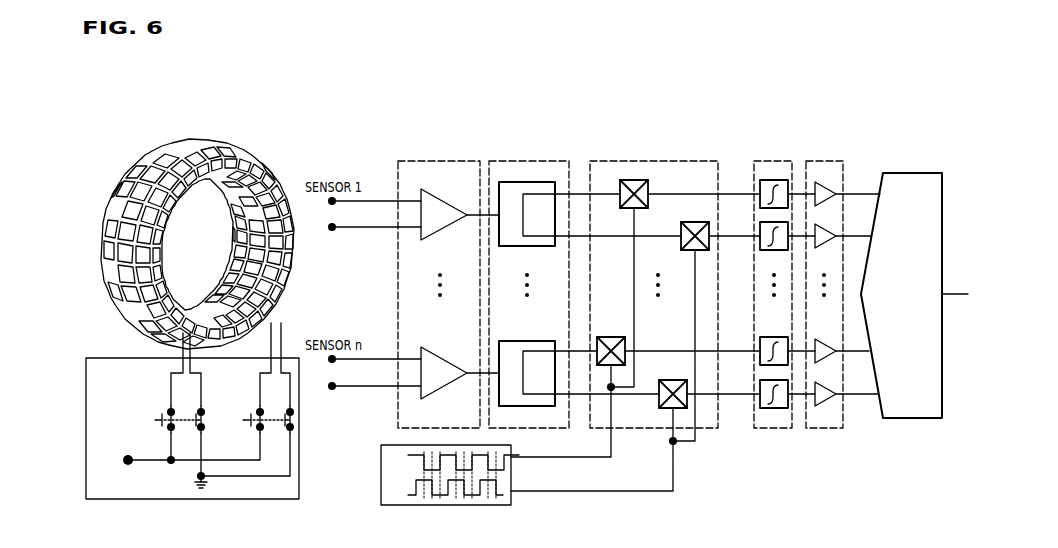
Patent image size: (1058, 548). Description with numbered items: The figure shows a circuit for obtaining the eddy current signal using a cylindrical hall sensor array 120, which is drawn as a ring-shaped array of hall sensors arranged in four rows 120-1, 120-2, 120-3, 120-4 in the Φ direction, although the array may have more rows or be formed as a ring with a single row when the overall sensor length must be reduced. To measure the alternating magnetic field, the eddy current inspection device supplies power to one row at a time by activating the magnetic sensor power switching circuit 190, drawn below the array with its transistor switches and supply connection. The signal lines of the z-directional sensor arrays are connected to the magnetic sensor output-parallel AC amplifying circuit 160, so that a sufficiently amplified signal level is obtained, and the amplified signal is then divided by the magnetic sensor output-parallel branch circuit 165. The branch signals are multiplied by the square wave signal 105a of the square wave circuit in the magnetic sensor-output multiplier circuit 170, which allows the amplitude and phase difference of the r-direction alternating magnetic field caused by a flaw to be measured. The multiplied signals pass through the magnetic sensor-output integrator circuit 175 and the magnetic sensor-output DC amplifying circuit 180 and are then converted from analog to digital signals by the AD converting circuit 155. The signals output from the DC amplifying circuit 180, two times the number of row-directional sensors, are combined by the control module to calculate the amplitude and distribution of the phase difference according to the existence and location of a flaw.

The cylindrical hall sensor array 120 is at (87, 121).
The first row of the cylindrical hall sensor array 120-1 is at (152, 152).
The second row of the cylindrical hall sensor array 120-2 is at (178, 151).
The third row of the cylindrical hall sensor array 120-3 is at (193, 150).
The fourth row of the cylindrical hall sensor array 120-4 is at (208, 145).
The magnetic sensor power switching circuit 190 is at (150, 499).
The magnetic sensor output-parallel AC amplifying circuit 160 is at (440, 161).
The magnetic sensor output-parallel branch circuit 165 is at (530, 161).
The magnetic sensor-output multiplier circuit 170 is at (655, 161).
The magnetic sensor-output integrator circuit 175 is at (775, 161).
The magnetic sensor-output DC amplifying circuit 180 is at (822, 161).
The AD converting circuit 155 is at (912, 419).
The square wave signal 105a is at (392, 505).